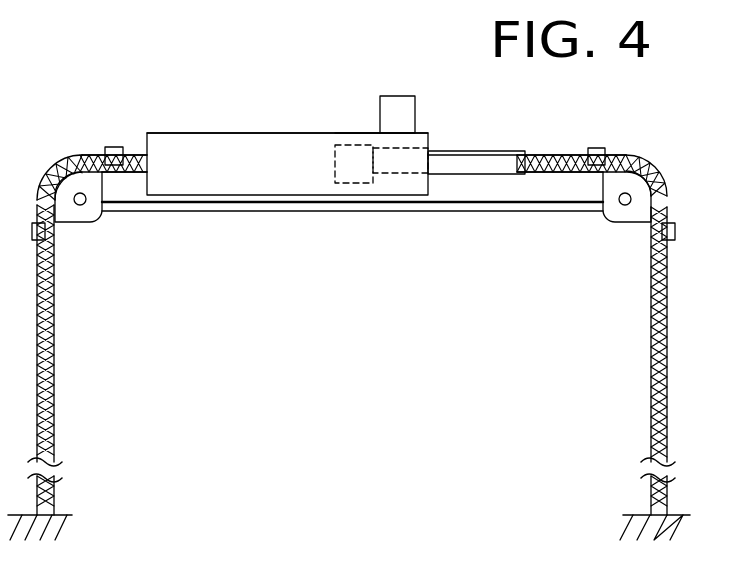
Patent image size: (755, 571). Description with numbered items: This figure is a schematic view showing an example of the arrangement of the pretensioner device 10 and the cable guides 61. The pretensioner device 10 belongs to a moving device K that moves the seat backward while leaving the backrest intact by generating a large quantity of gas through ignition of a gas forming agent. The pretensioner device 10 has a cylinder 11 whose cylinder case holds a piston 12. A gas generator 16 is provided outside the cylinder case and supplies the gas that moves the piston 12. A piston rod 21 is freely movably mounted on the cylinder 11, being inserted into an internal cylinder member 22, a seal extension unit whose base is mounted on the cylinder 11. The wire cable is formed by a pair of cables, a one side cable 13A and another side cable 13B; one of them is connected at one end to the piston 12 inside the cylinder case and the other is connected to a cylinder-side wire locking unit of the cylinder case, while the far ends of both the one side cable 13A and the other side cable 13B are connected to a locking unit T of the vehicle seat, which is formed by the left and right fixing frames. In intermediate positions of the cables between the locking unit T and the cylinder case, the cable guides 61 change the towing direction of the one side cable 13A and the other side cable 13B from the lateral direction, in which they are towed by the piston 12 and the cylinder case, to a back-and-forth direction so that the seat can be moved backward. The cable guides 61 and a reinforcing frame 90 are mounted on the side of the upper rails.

The pretensioner device 10 is at (172, 126).
The cylinder 11 is at (302, 132).
The piston 12 is at (333, 175).
The one side cable 13A is at (530, 157).
The other side cable 13B is at (138, 155).
The gas generator 16 is at (413, 120).
The piston rod 21 is at (495, 175).
The internal cylinder member 22 is at (395, 177).
The cable guide 61 is at (75, 217).
The reinforcing frame 90 is at (418, 207).
The moving device K is at (355, 126).
The locking unit T is at (62, 515).